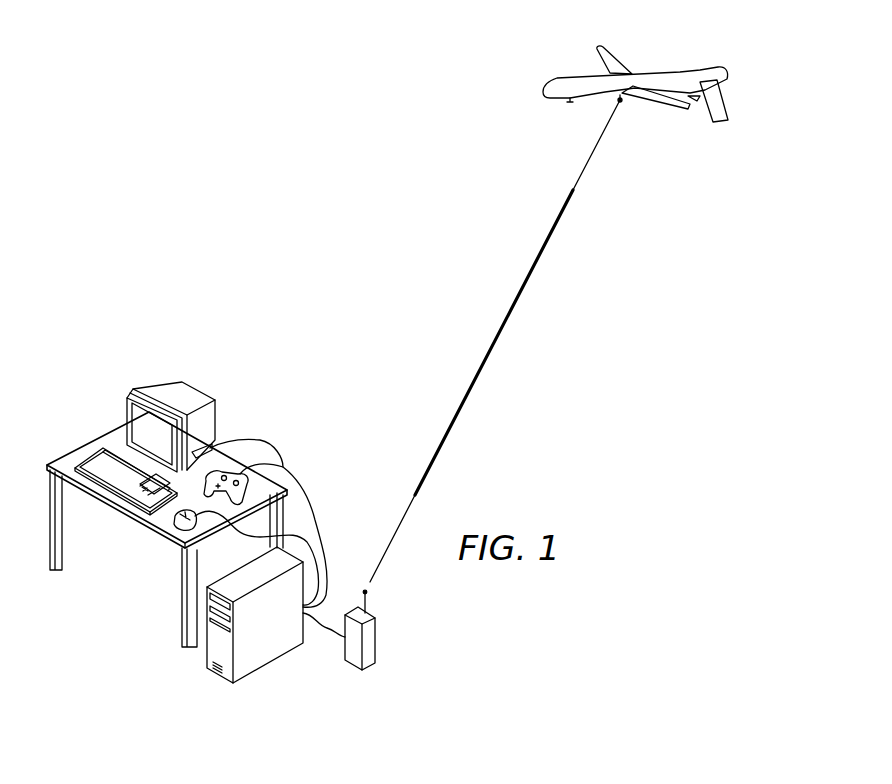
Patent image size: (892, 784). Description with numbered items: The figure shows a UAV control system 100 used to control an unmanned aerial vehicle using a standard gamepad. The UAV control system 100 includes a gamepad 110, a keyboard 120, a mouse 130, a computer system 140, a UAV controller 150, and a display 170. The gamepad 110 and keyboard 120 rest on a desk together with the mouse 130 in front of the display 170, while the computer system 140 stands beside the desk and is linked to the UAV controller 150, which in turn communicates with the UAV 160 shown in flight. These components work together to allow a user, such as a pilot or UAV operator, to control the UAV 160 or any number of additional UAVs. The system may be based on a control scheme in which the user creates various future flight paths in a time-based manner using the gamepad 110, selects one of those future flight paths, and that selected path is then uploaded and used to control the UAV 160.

The UAV control system 100 is at (287, 228).
The gamepad 110 is at (220, 463).
The keyboard 120 is at (88, 458).
The mouse 130 is at (158, 530).
The computer system 140 is at (258, 658).
The UAV controller 150 is at (375, 651).
The UAV 160 is at (658, 75).
The display 170 is at (125, 406).